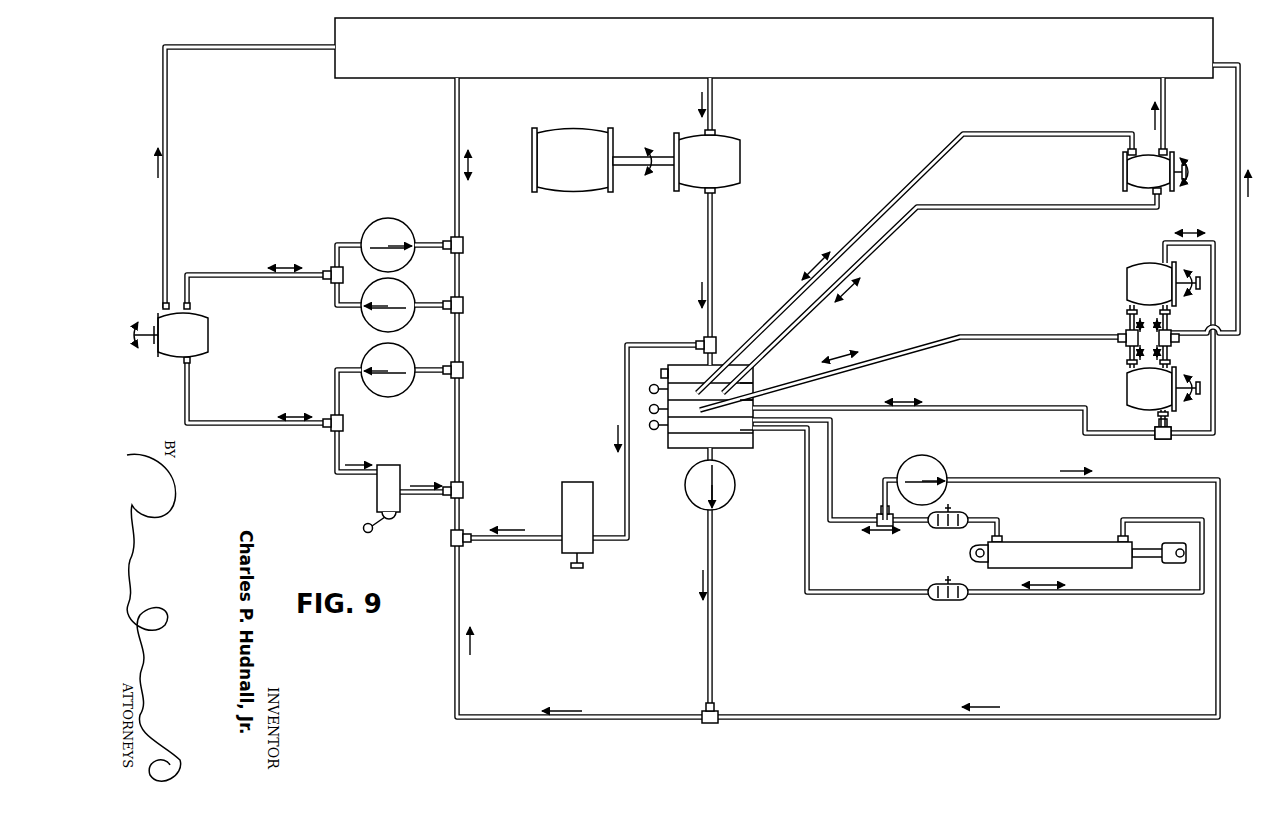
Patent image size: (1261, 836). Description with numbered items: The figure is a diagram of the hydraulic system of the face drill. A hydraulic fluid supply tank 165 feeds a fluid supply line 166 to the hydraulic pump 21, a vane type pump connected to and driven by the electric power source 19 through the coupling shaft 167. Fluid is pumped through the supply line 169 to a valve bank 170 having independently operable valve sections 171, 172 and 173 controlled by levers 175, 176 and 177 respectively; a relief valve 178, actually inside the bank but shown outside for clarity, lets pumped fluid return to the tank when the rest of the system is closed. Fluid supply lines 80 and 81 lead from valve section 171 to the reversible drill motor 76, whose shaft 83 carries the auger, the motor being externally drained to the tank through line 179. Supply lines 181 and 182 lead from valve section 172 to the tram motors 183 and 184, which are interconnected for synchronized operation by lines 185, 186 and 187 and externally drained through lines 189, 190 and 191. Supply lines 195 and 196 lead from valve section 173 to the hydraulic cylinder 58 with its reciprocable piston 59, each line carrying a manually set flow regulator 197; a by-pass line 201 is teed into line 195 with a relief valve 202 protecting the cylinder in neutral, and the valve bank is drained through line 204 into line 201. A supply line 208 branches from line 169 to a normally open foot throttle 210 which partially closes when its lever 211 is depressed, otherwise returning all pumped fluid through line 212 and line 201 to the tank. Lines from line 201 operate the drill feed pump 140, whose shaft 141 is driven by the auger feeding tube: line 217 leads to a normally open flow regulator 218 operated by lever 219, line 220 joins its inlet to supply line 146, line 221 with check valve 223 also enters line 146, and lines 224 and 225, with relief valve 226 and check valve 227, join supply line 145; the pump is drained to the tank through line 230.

The electric power source 19 is at (570, 185).
The hydraulic pump 21 is at (740, 158).
The hydraulic cylinder 58 is at (1065, 542).
The reciprocable piston 59 is at (1143, 556).
The hydraulic motor 76 is at (1124, 172).
The inlet and outlet conduit 80 is at (976, 136).
The inlet and outlet conduit 81 is at (960, 207).
The shaft 83 is at (1187, 172).
The hydraulic pump 140 is at (207, 335).
The shaft 141 is at (136, 340).
The supply line 145 is at (233, 272).
The supply line 146 is at (282, 424).
The hydraulic fluid supply tank 165 is at (822, 78).
The fluid supply line 166 is at (713, 103).
The coupling shaft 167 is at (655, 170).
The supply line 169 is at (713, 240).
The valve bank 170 is at (745, 448).
The valve section 171 is at (752, 385).
The valve section 172 is at (760, 402).
The valve section 173 is at (752, 430).
The lever 175 is at (649, 389).
The lever 176 is at (649, 409).
The lever 177 is at (654, 430).
The relief valve 178 is at (733, 497).
The drain line 179 is at (1166, 105).
The hydraulic fluid supply line 181 is at (990, 337).
The hydraulic fluid supply line 182 is at (972, 408).
The tram motor 183 is at (1127, 283).
The tram motor 184 is at (1127, 390).
The interconnecting line 185 is at (1129, 322).
The interconnecting line 186 is at (1129, 352).
The interconnecting line 187 is at (1200, 436).
The drain line 189 is at (1168, 320).
The drain line 190 is at (1168, 350).
The drain line 191 is at (1236, 208).
The hydraulic fluid supply line 195 is at (833, 465).
The hydraulic fluid supply line 196 is at (806, 545).
The flow regulator 197 is at (950, 529).
The by-pass line 201 is at (462, 600).
The relief valve 202 is at (940, 462).
The drain line 204 is at (714, 625).
The supply line 208 is at (640, 343).
The foot throttle 210 is at (577, 484).
The lever 211 is at (578, 568).
The line 212 is at (530, 540).
The line 217 is at (404, 494).
The flow regulator 218 is at (392, 472).
The lever 219 is at (368, 532).
The line 220 is at (358, 472).
The line 221 is at (335, 366).
The check valve 223 is at (388, 397).
The line 224 is at (436, 243).
The line 225 is at (424, 302).
The relief valve 226 is at (372, 222).
The check valve 227 is at (362, 313).
The drain line 230 is at (170, 186).